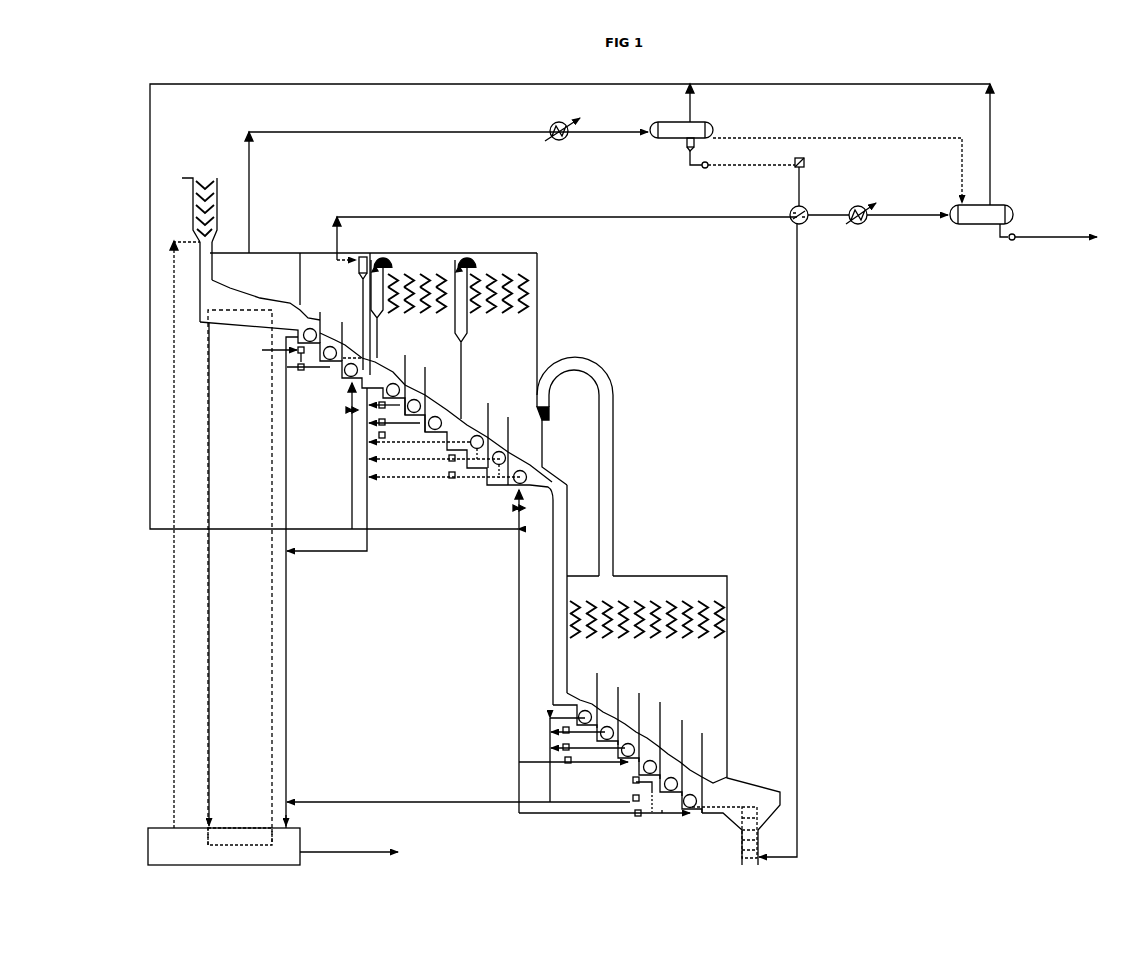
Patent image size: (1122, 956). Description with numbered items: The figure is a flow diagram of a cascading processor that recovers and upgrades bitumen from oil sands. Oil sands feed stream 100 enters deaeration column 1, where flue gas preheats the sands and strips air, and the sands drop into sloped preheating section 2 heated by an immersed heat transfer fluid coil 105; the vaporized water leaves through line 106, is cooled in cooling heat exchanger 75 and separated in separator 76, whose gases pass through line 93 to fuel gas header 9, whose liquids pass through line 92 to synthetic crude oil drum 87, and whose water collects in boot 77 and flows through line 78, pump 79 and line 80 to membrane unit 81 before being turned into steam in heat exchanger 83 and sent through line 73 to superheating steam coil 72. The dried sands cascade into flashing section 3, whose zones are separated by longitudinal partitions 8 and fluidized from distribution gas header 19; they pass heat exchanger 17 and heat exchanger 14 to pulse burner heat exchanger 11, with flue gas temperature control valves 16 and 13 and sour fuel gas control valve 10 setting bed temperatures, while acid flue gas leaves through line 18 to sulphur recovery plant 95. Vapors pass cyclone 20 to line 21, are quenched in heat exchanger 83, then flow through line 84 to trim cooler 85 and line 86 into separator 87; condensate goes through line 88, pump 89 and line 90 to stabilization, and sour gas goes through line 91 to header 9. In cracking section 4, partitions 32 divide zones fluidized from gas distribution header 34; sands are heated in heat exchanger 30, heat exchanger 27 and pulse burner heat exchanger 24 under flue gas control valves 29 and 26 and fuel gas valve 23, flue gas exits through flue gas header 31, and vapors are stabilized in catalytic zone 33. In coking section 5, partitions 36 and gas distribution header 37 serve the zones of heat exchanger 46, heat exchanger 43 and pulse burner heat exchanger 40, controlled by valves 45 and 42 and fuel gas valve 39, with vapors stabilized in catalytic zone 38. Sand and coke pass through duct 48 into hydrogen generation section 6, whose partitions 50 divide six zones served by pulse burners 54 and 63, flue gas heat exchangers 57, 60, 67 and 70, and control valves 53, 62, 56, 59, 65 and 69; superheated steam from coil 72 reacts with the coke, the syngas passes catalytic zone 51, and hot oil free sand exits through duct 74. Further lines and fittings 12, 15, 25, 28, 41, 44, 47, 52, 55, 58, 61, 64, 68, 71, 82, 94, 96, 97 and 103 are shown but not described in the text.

The deaeration section 1 is at (192, 215).
The preheating section 2 is at (256, 250).
The flashing section 3 is at (306, 250).
The oil cracking section 4 is at (404, 250).
The coking section 5 is at (512, 250).
The hydrogen generation section 6 is at (632, 574).
The longitudinal partitions 8 is at (340, 323).
The fuel gas header 9 is at (148, 492).
The sour fuel gas control valve 10 is at (346, 411).
The immersed pulse burner heat exchanger 11 is at (349, 379).
The connecting conduit 12 is at (329, 362).
The flue gas temperature control valve 13 is at (301, 372).
The heat exchanger 14 is at (337, 352).
The connecting line 15 is at (308, 350).
The flue gas temperature control valve 16 is at (274, 349).
The heat exchanger 17 is at (310, 327).
The line 18 is at (284, 390).
The distribution gas header 19 is at (373, 337).
The cyclone 20 is at (356, 265).
The line 21 is at (366, 215).
The fuel gas valve 23 is at (380, 440).
The pulse burner heat exchanger 24 is at (435, 415).
The valve 25 is at (378, 436).
The flue gas temperature control valve 26 is at (377, 425).
The heat exchanger 27 is at (414, 398).
The valve 28 is at (377, 421).
The flue gas temperature control valve 29 is at (376, 406).
The heat exchanger 30 is at (393, 382).
The flue gas header 31 is at (360, 556).
The longitudinal partitions 32 is at (424, 367).
The catalytic zone 33 is at (406, 312).
The gas distribution header 34 is at (460, 348).
The longitudinal partitions 36 is at (507, 417).
The gas distribution header 37 is at (541, 421).
The catalytic zone 38 is at (516, 312).
The fuel gas valve 39 is at (515, 510).
The pulse burner heat exchanger 40 is at (513, 482).
The valve 41 is at (474, 470).
The flue gas temperature control valve 42 is at (451, 481).
The heat exchanger 43 is at (499, 450).
The connecting line 44 is at (470, 484).
The flue gas temperature control valve 45 is at (450, 482).
The heat exchanger 46 is at (477, 434).
The supply line 47 is at (440, 446).
The duct 48 is at (552, 552).
The partitions 50 is at (702, 733).
The catalytic zone 51 is at (606, 638).
The transfer tube 52 is at (614, 528).
The temperature control valve 53 is at (636, 819).
The immersed pulse burner 54 is at (693, 809).
The connecting line 55 is at (663, 816).
The control valve 56 is at (634, 804).
The flue gas heat exchanger 57 is at (671, 776).
The connecting line 58 is at (651, 797).
The control valve 59 is at (630, 789).
The flue gas heat exchanger 60 is at (650, 759).
The valve 61 is at (630, 778).
The temperature control valve 62 is at (567, 763).
The immersed pulse burner 63 is at (628, 742).
The supply line 64 is at (598, 764).
The control valve 65 is at (565, 765).
The flue gas heat exchanger 67 is at (607, 725).
The supply line 68 is at (548, 749).
The control valve 69 is at (548, 736).
The flue gas heat exchanger 70 is at (585, 709).
The supply line 71 is at (546, 721).
The superheating steam coil 72 is at (749, 800).
The line 73 is at (800, 826).
The duct 74 is at (740, 862).
The cooling heat exchanger 75 is at (549, 143).
The separator 76 is at (647, 137).
The boot 77 is at (684, 146).
The line 78 is at (686, 167).
The pump 79 is at (704, 171).
The line 80 is at (774, 168).
The membrane unit 81 is at (793, 170).
The line 82 is at (803, 196).
The heat exchanger 83 is at (792, 225).
The line 84 is at (830, 222).
The trim cooler 85 is at (863, 226).
The line 86 is at (928, 222).
The separator 87 is at (978, 228).
The line 88 is at (998, 245).
The pump 89 is at (1014, 244).
The line 90 is at (1075, 242).
The line 91 is at (993, 166).
The line 92 is at (836, 139).
The line 93 is at (694, 113).
The return line 94 is at (481, 806).
The sulphur recovery plant 95 is at (303, 834).
The outlet line 96 is at (385, 848).
The inner compartment 97 is at (224, 842).
The oil sands feed stream 100 is at (200, 178).
The gas supply line 103 is at (176, 238).
The immersed heat transfer fluid coil 105 is at (244, 314).
The line 106 is at (251, 197).